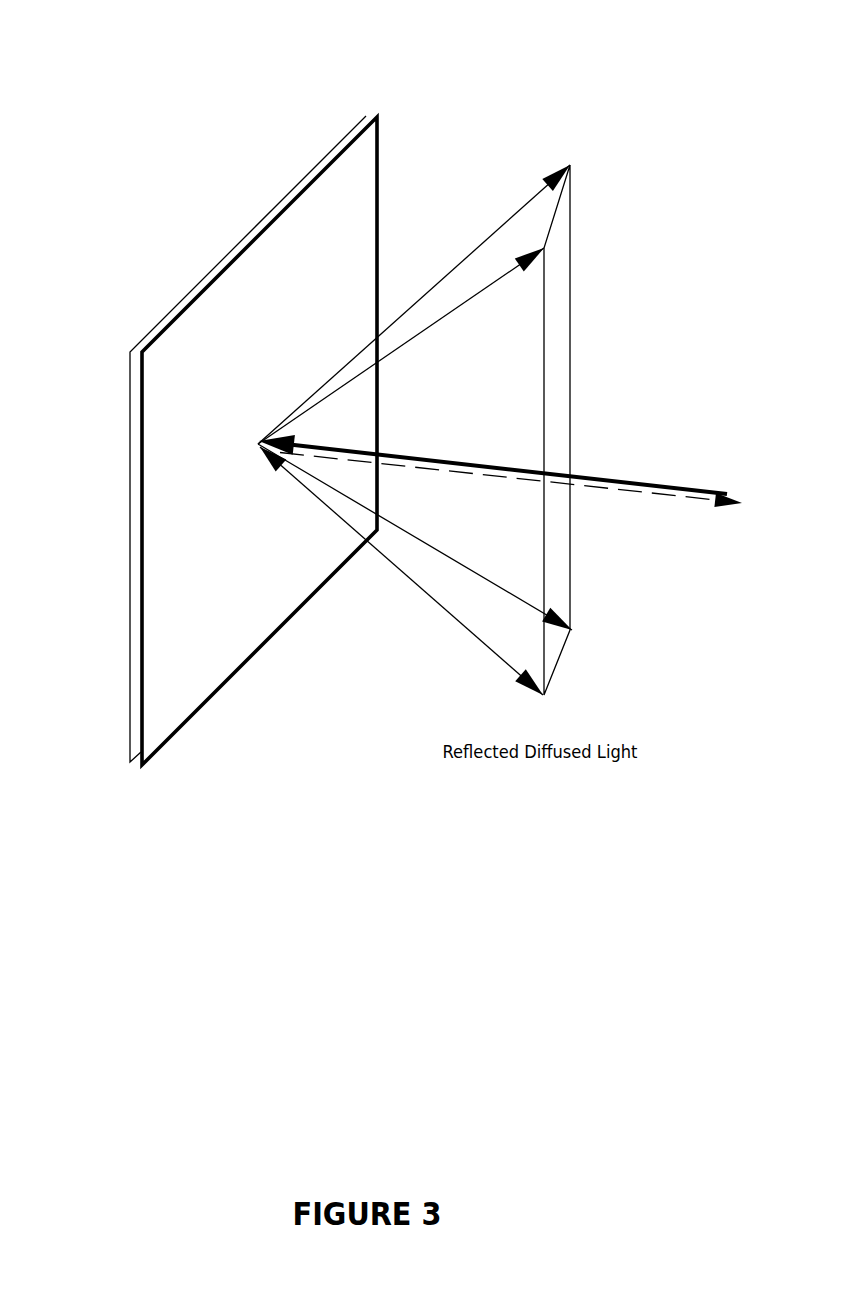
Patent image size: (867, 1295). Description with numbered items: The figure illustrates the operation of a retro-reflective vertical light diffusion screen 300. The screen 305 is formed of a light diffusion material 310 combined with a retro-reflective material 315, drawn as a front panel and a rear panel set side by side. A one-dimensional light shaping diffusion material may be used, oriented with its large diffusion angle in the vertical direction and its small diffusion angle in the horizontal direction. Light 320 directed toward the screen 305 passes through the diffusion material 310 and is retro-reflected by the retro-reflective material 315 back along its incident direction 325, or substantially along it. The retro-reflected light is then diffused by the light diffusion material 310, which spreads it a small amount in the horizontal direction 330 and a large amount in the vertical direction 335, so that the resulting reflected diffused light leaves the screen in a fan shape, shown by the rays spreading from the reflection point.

The retro-reflective vertical light diffusion screen 300 is at (417, 44).
The screen 305 is at (200, 445).
The light diffusion material 310 is at (187, 723).
The retro-reflective material 315 is at (125, 712).
The light 320 is at (675, 482).
The incident direction 325 is at (647, 497).
The horizontal direction 330 is at (433, 590).
The vertical direction 335 is at (328, 470).